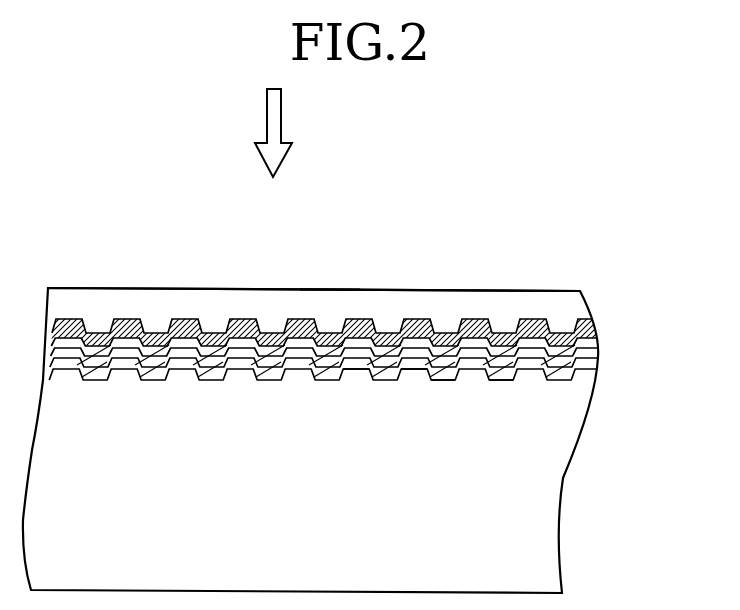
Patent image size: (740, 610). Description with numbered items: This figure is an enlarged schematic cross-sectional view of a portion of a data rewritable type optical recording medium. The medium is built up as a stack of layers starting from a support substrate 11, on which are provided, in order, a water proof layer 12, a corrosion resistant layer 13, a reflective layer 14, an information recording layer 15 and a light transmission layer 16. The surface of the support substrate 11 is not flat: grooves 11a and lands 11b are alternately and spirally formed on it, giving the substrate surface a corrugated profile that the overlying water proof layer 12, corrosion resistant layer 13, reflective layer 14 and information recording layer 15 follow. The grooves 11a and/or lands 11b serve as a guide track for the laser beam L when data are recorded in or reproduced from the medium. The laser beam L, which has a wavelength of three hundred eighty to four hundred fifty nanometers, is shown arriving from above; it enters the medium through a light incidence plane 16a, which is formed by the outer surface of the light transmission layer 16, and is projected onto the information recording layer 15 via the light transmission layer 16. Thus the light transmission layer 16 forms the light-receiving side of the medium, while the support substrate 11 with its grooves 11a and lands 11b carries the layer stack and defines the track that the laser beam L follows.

The laser beam L is at (281, 123).
The support substrate 11 is at (550, 456).
The grooves 11a is at (417, 372).
The lands 11b is at (503, 381).
The water proof layer 12 is at (587, 365).
The corrosion resistant layer 13 is at (587, 355).
The reflective layer 14 is at (588, 345).
The information recording layer 15 is at (593, 333).
The light transmission layer 16 is at (575, 302).
The light incidence plane 16a is at (331, 290).